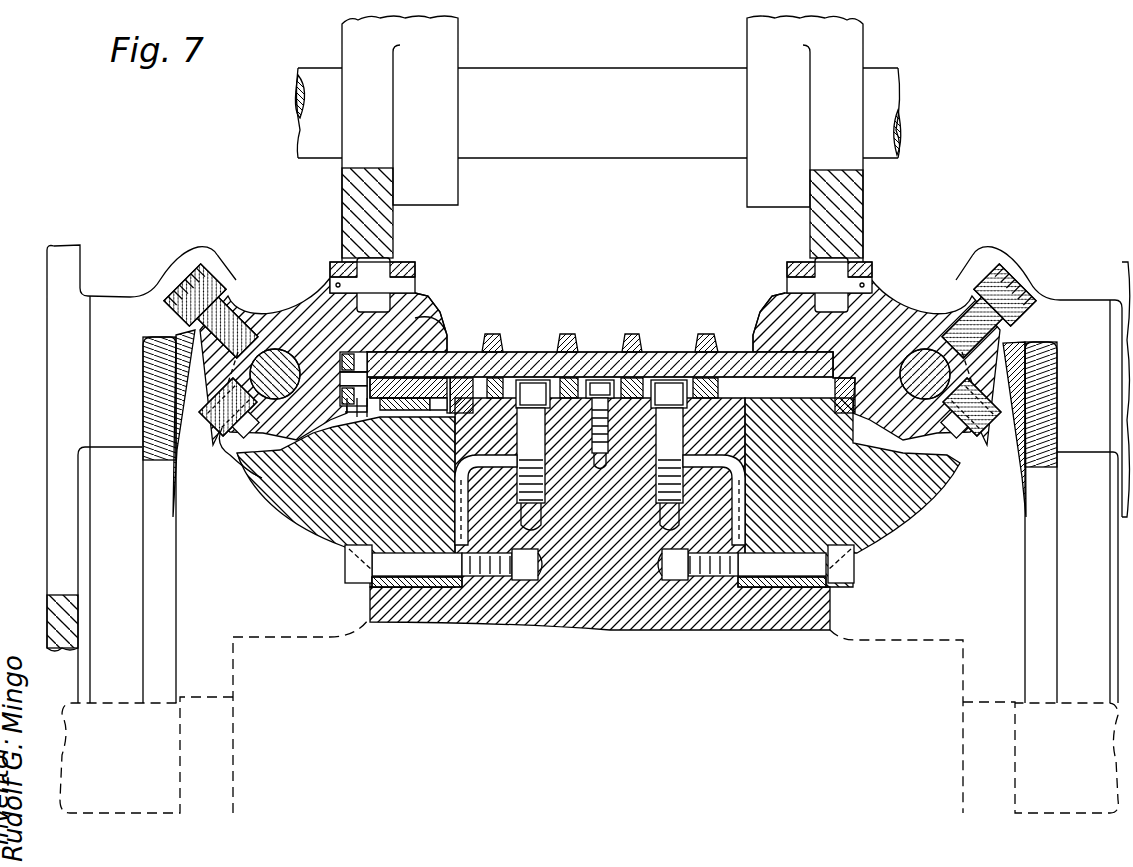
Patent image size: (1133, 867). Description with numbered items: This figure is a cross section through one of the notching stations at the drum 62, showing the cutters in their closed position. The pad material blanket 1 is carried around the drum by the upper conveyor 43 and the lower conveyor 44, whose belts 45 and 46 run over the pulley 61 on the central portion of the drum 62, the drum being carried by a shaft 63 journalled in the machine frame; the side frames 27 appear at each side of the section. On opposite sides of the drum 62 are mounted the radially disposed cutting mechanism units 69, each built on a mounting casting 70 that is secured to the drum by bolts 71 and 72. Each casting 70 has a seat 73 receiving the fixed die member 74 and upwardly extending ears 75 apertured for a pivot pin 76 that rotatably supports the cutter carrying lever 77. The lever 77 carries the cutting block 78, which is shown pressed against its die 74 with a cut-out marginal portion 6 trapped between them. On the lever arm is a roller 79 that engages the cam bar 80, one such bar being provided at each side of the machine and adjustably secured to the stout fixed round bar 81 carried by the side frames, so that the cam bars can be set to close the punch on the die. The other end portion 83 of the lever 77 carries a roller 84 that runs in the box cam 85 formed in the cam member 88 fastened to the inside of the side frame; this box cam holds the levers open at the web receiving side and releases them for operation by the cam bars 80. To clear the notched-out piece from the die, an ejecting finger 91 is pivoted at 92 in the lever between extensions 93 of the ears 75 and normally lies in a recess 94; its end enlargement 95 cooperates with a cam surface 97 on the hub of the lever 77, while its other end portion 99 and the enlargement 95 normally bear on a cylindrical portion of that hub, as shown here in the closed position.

The pad material blanket 1 is at (664, 356).
The cut-out marginal portion 6 is at (449, 350).
The side frame 27 is at (48, 290).
The upper conveyor 43 is at (720, 338).
The lower conveyor 44 is at (708, 400).
The upper conveyor belt 45 is at (494, 335).
The lower conveyor belt 46 is at (507, 395).
The pulley 61 is at (537, 366).
The drum 62 is at (713, 509).
The shaft 63 is at (75, 703).
The cutting mechanism unit 69 is at (262, 506).
The mounting casting 70 is at (318, 524).
The bolt 71 is at (512, 445).
The bolt 72 is at (383, 568).
The seat 73 is at (436, 422).
The die member 74 is at (463, 383).
The ear 75 is at (236, 450).
The pivot pin 76 is at (273, 352).
The cutter carrying lever 77 is at (294, 305).
The cutting block 78 is at (420, 318).
The roller 79 is at (386, 262).
The cam bar 80 is at (350, 190).
The bar 81 is at (548, 76).
The end portion 83 is at (232, 296).
The roller 84 is at (214, 276).
The box cam 85 is at (186, 276).
The cam member 88 is at (128, 297).
The ejecting finger 91 is at (384, 420).
The pivot 92 is at (360, 420).
The extension 93 is at (340, 392).
The recess 94 is at (402, 420).
The end enlargement 95 is at (340, 364).
The cam surface 97 is at (248, 470).
The end portion 99 is at (340, 378).